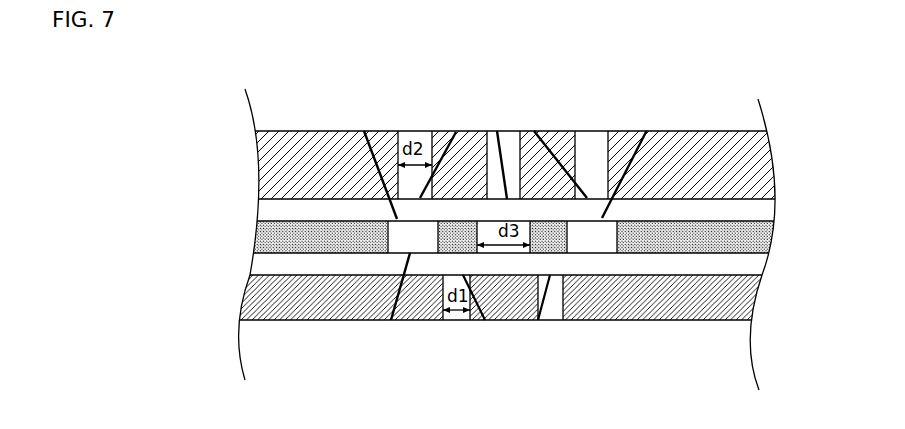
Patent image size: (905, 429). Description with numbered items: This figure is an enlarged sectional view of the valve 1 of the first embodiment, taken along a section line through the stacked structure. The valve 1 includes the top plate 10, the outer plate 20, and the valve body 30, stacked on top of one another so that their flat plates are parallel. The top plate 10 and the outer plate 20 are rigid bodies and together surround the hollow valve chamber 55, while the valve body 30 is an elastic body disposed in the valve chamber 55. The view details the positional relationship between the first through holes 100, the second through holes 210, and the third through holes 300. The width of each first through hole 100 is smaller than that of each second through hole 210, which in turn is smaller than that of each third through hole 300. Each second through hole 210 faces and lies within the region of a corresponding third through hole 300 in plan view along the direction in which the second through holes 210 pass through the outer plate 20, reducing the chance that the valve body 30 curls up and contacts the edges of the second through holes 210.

The valve 1 is at (740, 57).
The top plate 10 is at (740, 307).
The outer plate 20 is at (762, 165).
The valve body 30 is at (762, 240).
The valve chamber 55 is at (364, 131).
The first through holes 100 is at (538, 320).
The second through holes 210 is at (534, 131).
The third through holes 300 is at (646, 131).